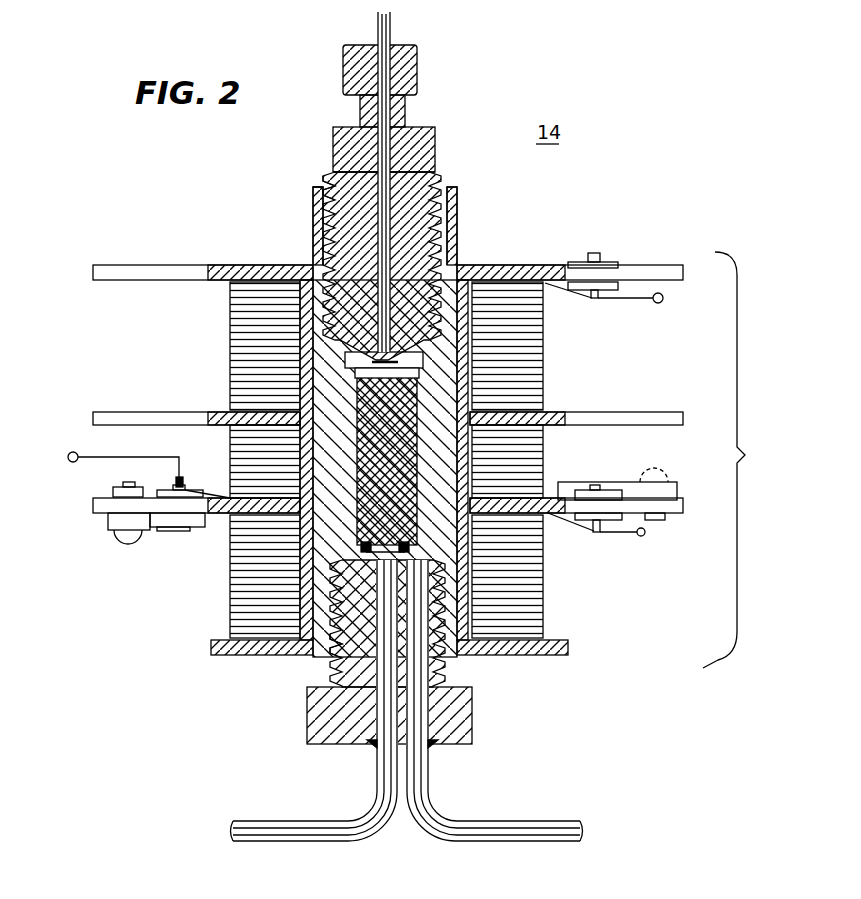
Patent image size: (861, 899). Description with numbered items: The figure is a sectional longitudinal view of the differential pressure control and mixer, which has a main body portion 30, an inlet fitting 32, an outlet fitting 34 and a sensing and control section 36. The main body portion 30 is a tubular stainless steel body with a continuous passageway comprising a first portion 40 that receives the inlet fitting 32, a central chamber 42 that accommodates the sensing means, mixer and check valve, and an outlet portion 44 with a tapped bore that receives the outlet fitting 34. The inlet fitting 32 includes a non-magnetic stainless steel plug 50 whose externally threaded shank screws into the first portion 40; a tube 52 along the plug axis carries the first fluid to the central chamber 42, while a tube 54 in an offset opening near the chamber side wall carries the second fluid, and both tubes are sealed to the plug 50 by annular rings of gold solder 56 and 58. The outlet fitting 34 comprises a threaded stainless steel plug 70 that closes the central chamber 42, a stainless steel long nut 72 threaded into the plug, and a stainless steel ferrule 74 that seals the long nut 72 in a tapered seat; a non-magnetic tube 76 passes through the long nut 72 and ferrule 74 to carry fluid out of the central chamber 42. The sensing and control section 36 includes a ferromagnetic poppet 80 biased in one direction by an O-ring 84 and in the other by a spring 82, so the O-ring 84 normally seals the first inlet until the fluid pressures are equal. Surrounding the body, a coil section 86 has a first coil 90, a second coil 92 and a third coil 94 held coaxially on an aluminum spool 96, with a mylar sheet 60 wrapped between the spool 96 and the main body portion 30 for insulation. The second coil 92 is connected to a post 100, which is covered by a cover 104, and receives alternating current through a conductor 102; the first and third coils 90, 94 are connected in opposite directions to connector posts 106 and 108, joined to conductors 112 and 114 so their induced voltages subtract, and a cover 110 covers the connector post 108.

The main body portion 30 is at (480, 238).
The inlet fitting 32 is at (419, 652).
The outlet fitting 34 is at (389, 198).
The sensing and control section 36 is at (739, 460).
The first portion 40 is at (305, 662).
The central chamber 42 is at (300, 440).
The outlet portion 44 is at (458, 196).
The stainless steel plug 50 is at (474, 700).
The tube 52 is at (300, 820).
The tube 54 is at (508, 824).
The gold solder 56 is at (375, 750).
The gold solder 58 is at (430, 750).
The mylar sheet 60 is at (310, 262).
The stainless steel plug 70 is at (333, 140).
The stainless steel long nut 72 is at (343, 62).
The stainless steel ferrule 74 is at (440, 360).
The non-magnetic tube 76 is at (392, 25).
The poppet 80 is at (470, 437).
The spring 82 is at (430, 380).
The O-ring 84 is at (412, 546).
The coil section 86 is at (193, 258).
The first coil 90 is at (203, 324).
The second coil 92 is at (186, 439).
The third coil 94 is at (220, 592).
The spool 96 is at (213, 652).
The post 100 is at (182, 478).
The conductor 102 is at (73, 463).
The cover 104 is at (198, 528).
The connector post 106 is at (605, 258).
The connector post 108 is at (606, 534).
The cover 110 is at (624, 483).
The conductor 112 is at (660, 305).
The conductor 114 is at (644, 537).